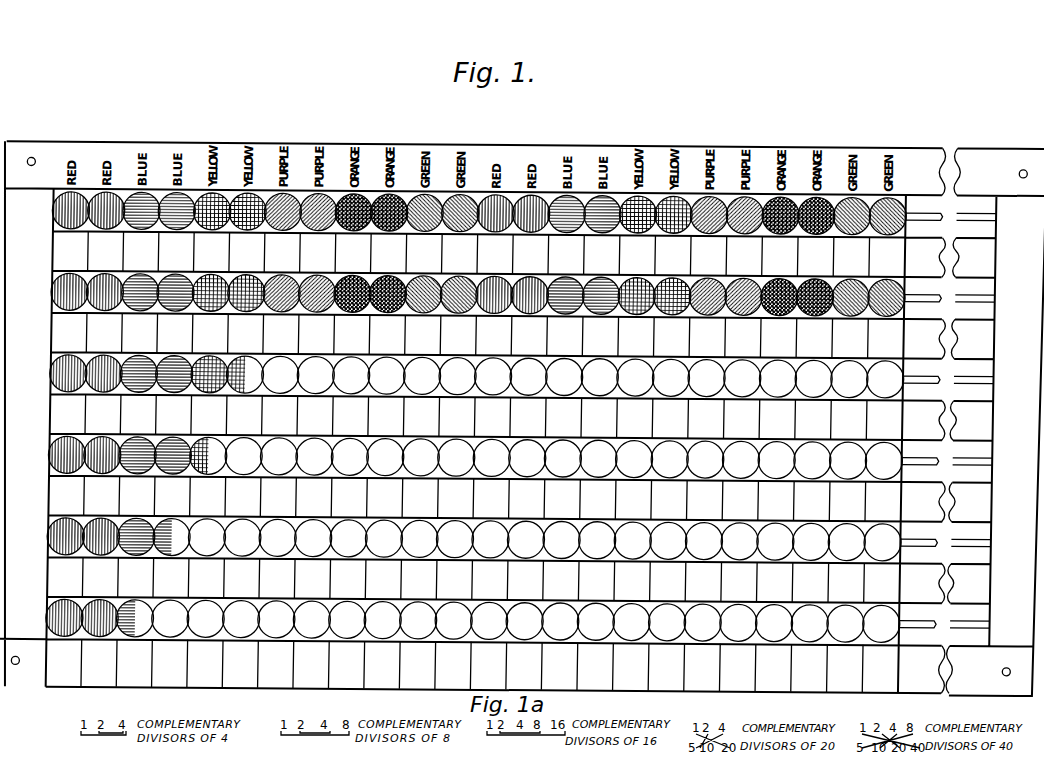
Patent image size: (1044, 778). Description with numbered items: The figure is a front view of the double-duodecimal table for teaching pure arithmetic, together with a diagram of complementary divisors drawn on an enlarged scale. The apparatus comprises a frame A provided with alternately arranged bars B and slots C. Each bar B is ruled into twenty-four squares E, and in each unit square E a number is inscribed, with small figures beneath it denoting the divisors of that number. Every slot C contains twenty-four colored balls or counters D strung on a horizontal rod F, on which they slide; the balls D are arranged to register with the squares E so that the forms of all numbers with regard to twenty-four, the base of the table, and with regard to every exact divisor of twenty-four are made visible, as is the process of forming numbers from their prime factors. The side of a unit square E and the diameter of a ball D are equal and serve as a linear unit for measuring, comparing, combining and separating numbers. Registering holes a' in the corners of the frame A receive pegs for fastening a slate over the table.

The frame A is at (999, 439).
The bar B is at (975, 357).
The slot C is at (996, 229).
The colored unit ball D is at (197, 192).
The unit square E is at (52, 312).
The rod F is at (916, 292).
The registering hole a' is at (519, 420).